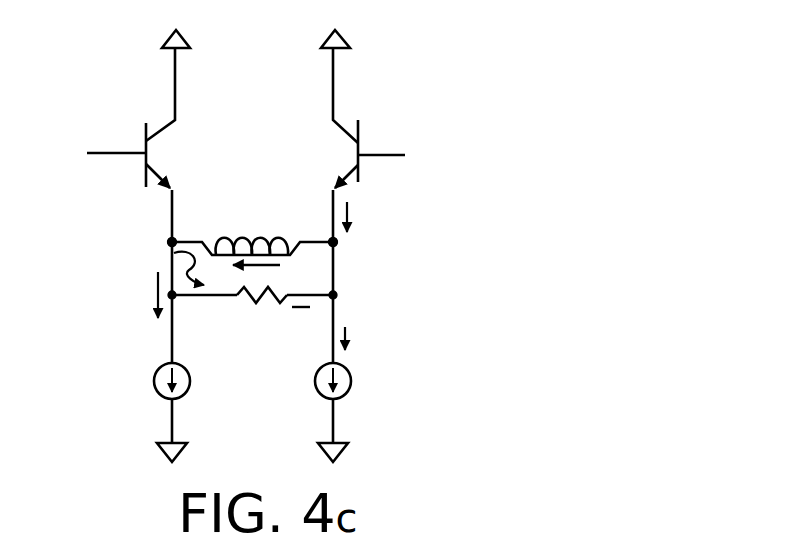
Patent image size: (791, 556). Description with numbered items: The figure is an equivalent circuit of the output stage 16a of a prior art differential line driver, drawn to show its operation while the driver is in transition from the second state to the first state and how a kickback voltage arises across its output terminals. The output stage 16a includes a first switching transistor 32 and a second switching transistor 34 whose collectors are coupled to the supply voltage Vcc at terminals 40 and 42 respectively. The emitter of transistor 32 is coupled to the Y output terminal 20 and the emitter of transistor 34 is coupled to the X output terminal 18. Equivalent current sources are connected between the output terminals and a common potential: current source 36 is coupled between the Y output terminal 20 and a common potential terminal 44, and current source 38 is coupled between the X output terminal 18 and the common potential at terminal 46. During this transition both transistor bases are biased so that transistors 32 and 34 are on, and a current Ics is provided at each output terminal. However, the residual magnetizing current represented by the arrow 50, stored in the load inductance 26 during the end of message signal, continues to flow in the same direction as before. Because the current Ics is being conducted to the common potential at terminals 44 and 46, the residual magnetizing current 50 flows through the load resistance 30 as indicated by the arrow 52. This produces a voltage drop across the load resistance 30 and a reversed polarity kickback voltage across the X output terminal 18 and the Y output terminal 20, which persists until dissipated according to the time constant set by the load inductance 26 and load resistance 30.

The output stage 16a is at (401, 81).
The supply voltage terminal 40 is at (163, 40).
The supply voltage terminal 42 is at (348, 44).
The first switching transistor 32 is at (140, 145).
The second switching transistor 34 is at (366, 138).
The load inductance 26 is at (236, 236).
The Y output terminal 20 is at (170, 242).
The X output terminal 18 is at (337, 244).
The arrow 52 is at (170, 258).
The residual magnetizing current 50 is at (262, 268).
The load resistance 30 is at (250, 301).
The current source 36 is at (158, 398).
The current source 38 is at (345, 395).
The common potential terminal 44 is at (160, 447).
The common potential terminal 46 is at (350, 452).